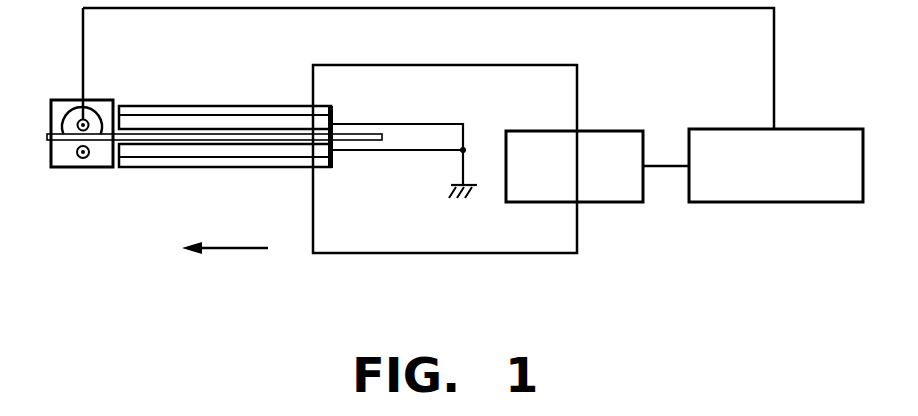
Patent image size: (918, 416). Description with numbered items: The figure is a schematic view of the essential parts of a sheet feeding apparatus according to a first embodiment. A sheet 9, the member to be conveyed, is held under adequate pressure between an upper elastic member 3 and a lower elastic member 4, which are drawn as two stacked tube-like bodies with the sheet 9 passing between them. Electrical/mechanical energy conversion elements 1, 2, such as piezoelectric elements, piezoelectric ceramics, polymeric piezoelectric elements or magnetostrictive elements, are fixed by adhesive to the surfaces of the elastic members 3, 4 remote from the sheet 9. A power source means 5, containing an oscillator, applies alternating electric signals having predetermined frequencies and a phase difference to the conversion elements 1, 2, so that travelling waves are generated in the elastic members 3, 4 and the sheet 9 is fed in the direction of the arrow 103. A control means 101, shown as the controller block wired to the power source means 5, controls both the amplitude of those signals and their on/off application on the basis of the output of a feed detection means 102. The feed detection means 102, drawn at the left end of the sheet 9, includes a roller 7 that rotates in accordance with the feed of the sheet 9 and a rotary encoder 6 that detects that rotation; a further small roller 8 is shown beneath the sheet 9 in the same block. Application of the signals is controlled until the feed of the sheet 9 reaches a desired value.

The electrical/mechanical energy conversion element 1 is at (247, 138).
The electrical/mechanical energy conversion element 2 is at (333, 168).
The elastic member 3 is at (197, 123).
The elastic member 4 is at (217, 150).
The power source means 5 is at (608, 131).
The rotary encoder 6 is at (73, 112).
The roller 7 is at (88, 118).
The guide roller 8 is at (92, 154).
The sheet 9 is at (368, 133).
The control means 101 is at (820, 129).
The feed detection means 102 is at (65, 158).
The arrow 103 is at (232, 250).